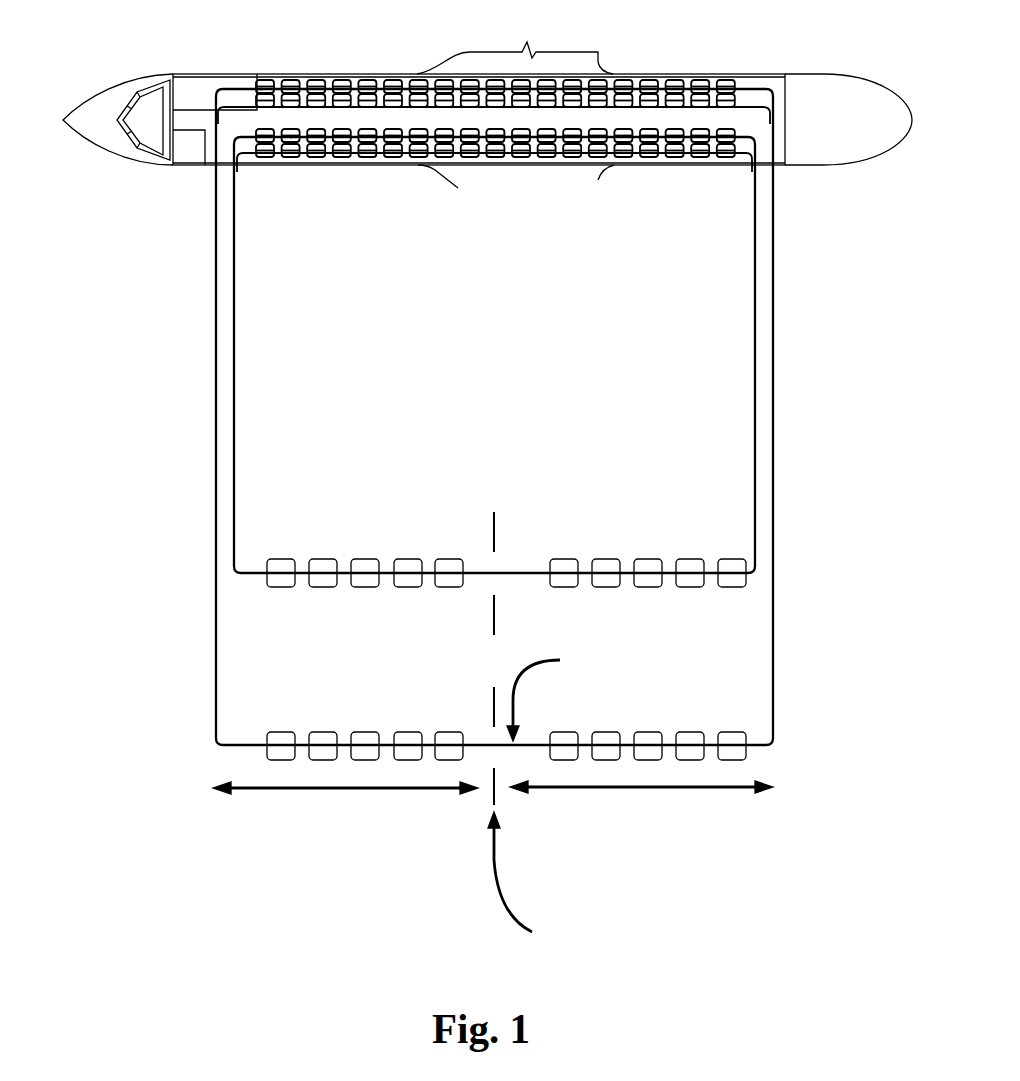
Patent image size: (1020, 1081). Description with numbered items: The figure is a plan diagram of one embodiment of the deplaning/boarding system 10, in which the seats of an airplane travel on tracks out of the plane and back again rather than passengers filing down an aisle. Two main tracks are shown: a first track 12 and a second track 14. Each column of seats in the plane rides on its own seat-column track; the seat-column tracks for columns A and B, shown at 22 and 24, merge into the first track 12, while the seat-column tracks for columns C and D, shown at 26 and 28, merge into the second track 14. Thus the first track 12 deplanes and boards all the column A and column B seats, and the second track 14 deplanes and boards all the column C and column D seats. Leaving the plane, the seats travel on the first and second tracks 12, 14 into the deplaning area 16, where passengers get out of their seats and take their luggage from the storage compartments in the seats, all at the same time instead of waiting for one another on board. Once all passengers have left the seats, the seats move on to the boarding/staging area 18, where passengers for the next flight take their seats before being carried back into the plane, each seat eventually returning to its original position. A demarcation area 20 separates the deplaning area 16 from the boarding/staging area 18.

The deplaning/boarding system 10 is at (103, 312).
The Track 1 12 is at (441, 302).
The Track 2 14 is at (418, 388).
The deplaning area 16 is at (250, 644).
The boarding/staging area 18 is at (756, 662).
The demarcation area 20 is at (495, 520).
The seat-column track A 22 is at (494, 195).
The seat-column track B 24 is at (248, 135).
The seat-column track C 26 is at (270, 103).
The seat-column track D 28 is at (258, 88).